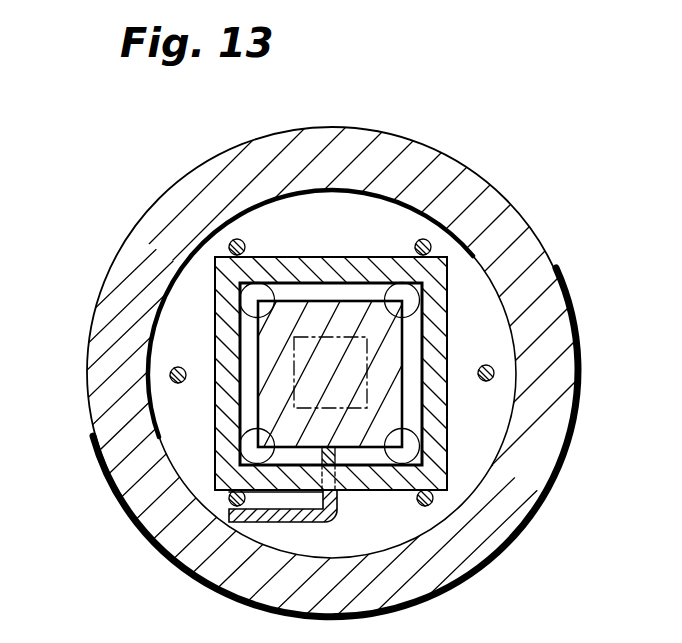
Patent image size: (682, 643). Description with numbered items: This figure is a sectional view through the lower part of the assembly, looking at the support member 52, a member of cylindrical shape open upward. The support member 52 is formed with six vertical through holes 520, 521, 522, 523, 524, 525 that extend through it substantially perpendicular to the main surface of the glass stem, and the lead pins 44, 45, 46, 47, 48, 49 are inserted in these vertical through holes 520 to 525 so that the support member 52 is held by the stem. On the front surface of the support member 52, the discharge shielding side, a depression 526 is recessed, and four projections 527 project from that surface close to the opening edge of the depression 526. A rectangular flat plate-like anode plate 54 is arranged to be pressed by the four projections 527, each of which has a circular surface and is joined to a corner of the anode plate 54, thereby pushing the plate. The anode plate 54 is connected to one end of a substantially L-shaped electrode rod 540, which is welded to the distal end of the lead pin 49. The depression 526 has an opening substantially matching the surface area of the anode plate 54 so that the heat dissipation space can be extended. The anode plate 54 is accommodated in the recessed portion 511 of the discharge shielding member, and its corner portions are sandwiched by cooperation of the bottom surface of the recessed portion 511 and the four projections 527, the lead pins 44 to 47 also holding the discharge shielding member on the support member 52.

The lead pin 44 is at (492, 379).
The lead pin 45 is at (170, 376).
The lead pin 46 is at (427, 240).
The lead pin 47 is at (229, 243).
The lead pin 48 is at (427, 506).
The lead pin 49 is at (229, 499).
The support member 52 is at (405, 588).
The anode plate 54 is at (347, 310).
The recessed portion 511 is at (412, 333).
The vertical through hole 520 is at (491, 366).
The vertical through hole 521 is at (171, 379).
The vertical through hole 522 is at (432, 506).
The vertical through hole 523 is at (432, 247).
The vertical through hole 524 is at (228, 247).
The vertical through hole 525 is at (229, 497).
The depression 526 is at (367, 395).
The projection 527 is at (443, 457).
The electrode rod 540 is at (215, 545).